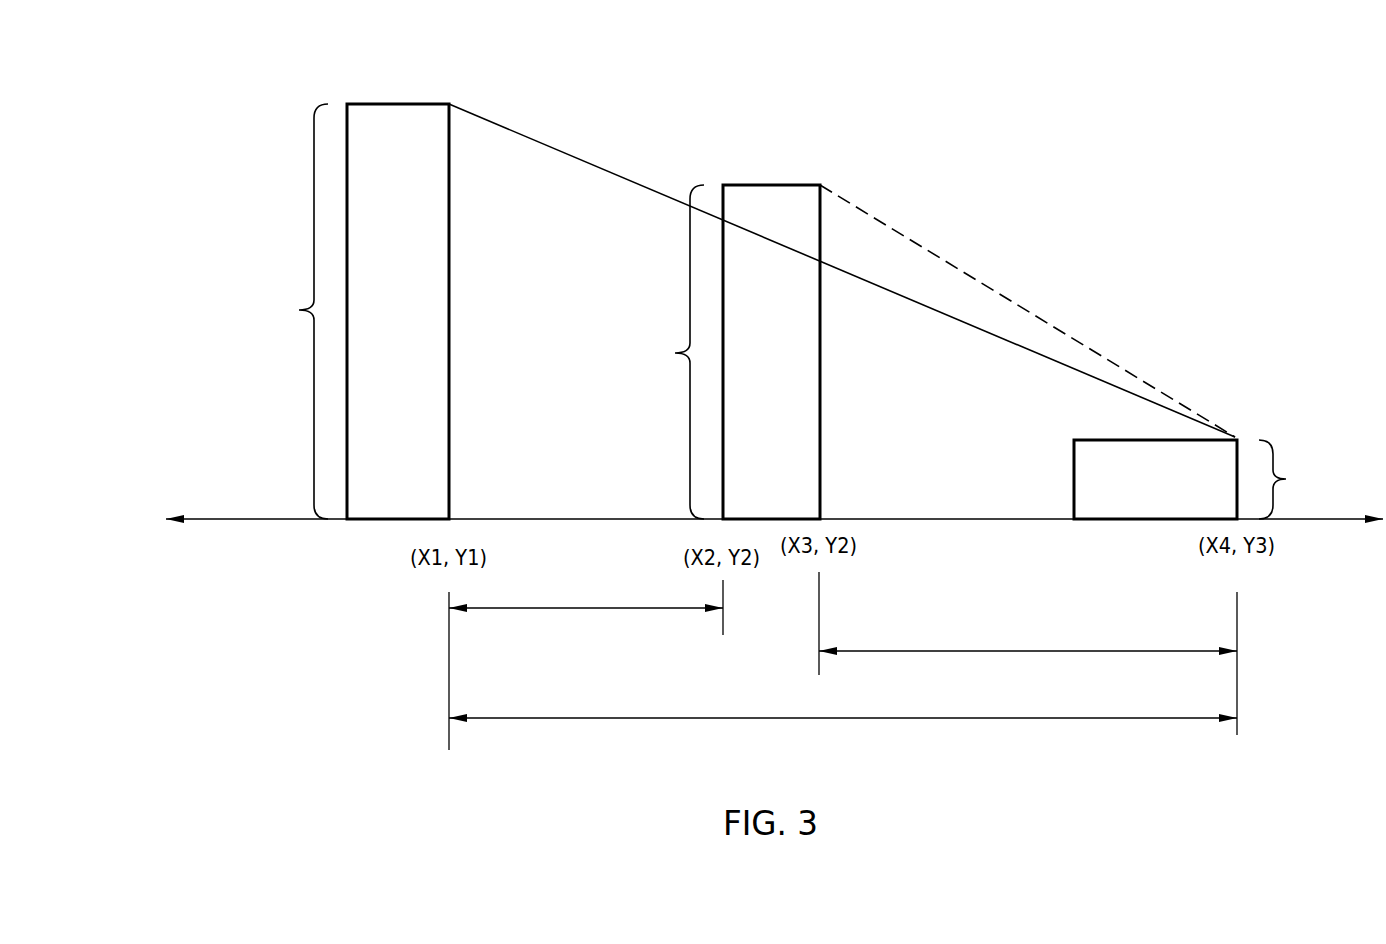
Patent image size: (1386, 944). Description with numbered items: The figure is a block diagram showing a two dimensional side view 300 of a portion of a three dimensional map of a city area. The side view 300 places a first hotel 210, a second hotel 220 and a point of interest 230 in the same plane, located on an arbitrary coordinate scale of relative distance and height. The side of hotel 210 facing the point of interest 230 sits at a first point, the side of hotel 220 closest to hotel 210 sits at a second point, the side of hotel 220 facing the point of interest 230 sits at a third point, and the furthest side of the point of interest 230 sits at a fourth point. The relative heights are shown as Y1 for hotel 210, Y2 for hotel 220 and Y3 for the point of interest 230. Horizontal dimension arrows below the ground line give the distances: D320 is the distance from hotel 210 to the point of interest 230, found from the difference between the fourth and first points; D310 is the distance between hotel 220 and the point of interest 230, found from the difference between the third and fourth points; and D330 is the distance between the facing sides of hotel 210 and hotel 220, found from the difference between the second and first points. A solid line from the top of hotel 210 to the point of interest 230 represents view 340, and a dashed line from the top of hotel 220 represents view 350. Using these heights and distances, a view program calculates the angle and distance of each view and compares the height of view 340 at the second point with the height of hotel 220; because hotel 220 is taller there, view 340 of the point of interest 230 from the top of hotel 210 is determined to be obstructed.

The hotel 210 is at (420, 428).
The hotel 220 is at (794, 445).
The point of interest 230 is at (1178, 509).
The side view 300 is at (1148, 157).
The view 340 is at (572, 157).
The view 350 is at (925, 250).
The distance between hotel 220 and point of interest D310 is at (940, 651).
The distance from hotel 210 to point of interest D320 is at (616, 718).
The distance between hotel 210 and hotel 220 D330 is at (540, 608).
The relative height of hotel 210 Y1 is at (289, 311).
The relative height of hotel 220 Y2 is at (664, 352).
The relative height of point of interest Y3 is at (1297, 479).